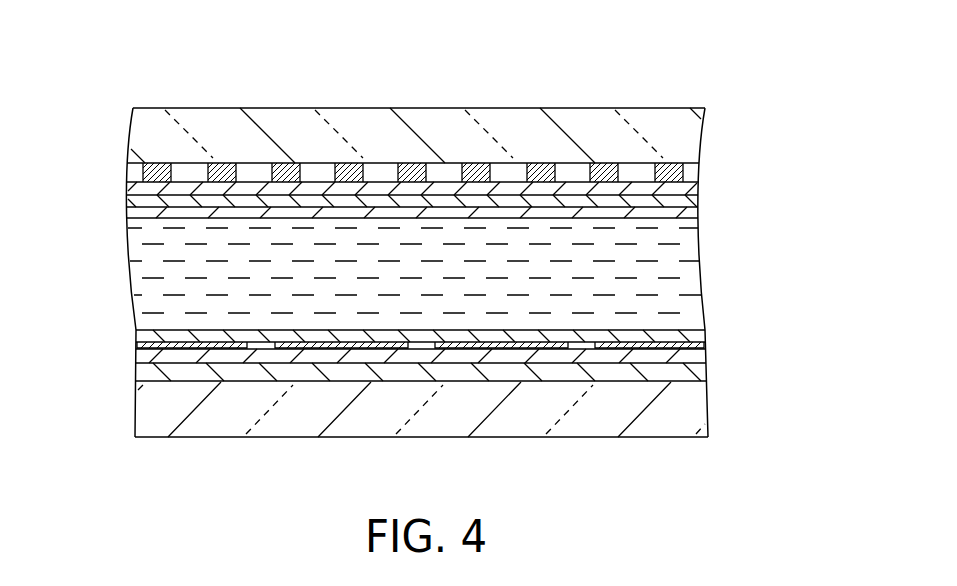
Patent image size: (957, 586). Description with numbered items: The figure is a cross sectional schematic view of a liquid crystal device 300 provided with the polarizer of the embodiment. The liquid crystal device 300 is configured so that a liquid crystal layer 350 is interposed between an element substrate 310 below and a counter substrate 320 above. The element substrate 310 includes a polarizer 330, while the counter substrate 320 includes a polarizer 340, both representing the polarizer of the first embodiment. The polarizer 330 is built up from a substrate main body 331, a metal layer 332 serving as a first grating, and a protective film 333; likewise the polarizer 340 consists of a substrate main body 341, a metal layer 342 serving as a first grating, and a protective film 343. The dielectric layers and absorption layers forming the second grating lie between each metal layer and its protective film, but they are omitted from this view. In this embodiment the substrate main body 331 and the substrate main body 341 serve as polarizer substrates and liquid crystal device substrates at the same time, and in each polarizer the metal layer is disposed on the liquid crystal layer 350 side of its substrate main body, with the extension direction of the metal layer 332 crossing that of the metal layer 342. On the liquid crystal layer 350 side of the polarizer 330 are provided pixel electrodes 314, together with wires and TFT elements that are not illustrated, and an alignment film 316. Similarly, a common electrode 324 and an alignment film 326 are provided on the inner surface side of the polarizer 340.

The liquid crystal device 300 is at (620, 40).
The element substrate 310 is at (113, 330).
The pixel electrodes 314 is at (192, 347).
The alignment film 316 is at (698, 338).
The counter substrate 320 is at (113, 110).
The common electrode 324 is at (693, 200).
The alignment film 326 is at (694, 215).
The polarizer 330 is at (794, 347).
The substrate main body 331 is at (698, 408).
The metal layer 332 is at (698, 373).
The protective film 333 is at (698, 355).
The polarizer 340 is at (794, 110).
The substrate main body 341 is at (694, 122).
The metal layer 342 is at (690, 170).
The protective film 343 is at (690, 190).
The liquid crystal layer 350 is at (694, 270).